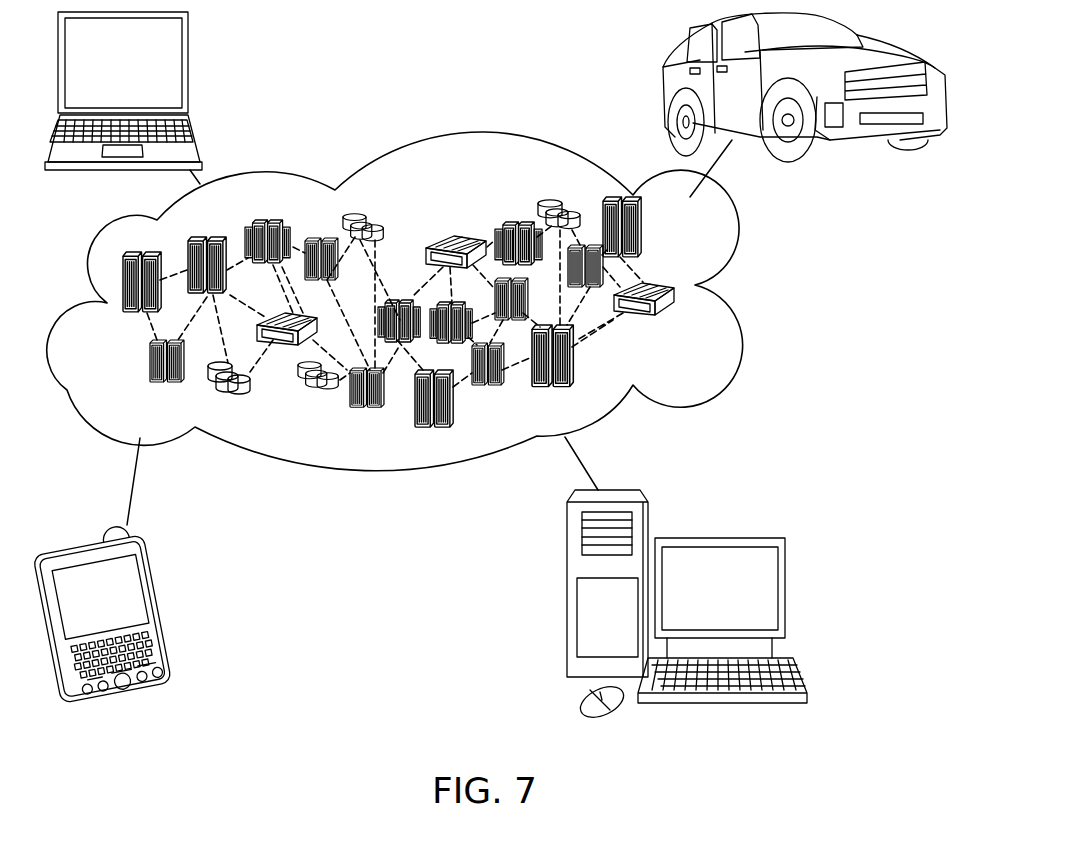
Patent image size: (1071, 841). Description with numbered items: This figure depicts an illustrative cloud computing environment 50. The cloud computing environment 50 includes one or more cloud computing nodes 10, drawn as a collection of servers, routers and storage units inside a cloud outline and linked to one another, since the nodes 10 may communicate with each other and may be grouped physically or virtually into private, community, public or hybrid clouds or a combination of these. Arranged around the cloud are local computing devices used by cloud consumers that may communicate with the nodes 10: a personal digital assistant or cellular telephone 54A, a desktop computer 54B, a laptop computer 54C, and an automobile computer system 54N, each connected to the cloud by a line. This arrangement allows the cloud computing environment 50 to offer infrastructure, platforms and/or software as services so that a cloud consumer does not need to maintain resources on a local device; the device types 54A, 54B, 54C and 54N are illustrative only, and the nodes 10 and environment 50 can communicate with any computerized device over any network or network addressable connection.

The cloud computing nodes 10 is at (703, 353).
The cloud computing environment 50 is at (738, 238).
The personal digital assistant or cellular telephone 54A is at (157, 587).
The desktop computer 54B is at (787, 587).
The laptop computer 54C is at (188, 68).
The automobile computer system 54N is at (850, 32).